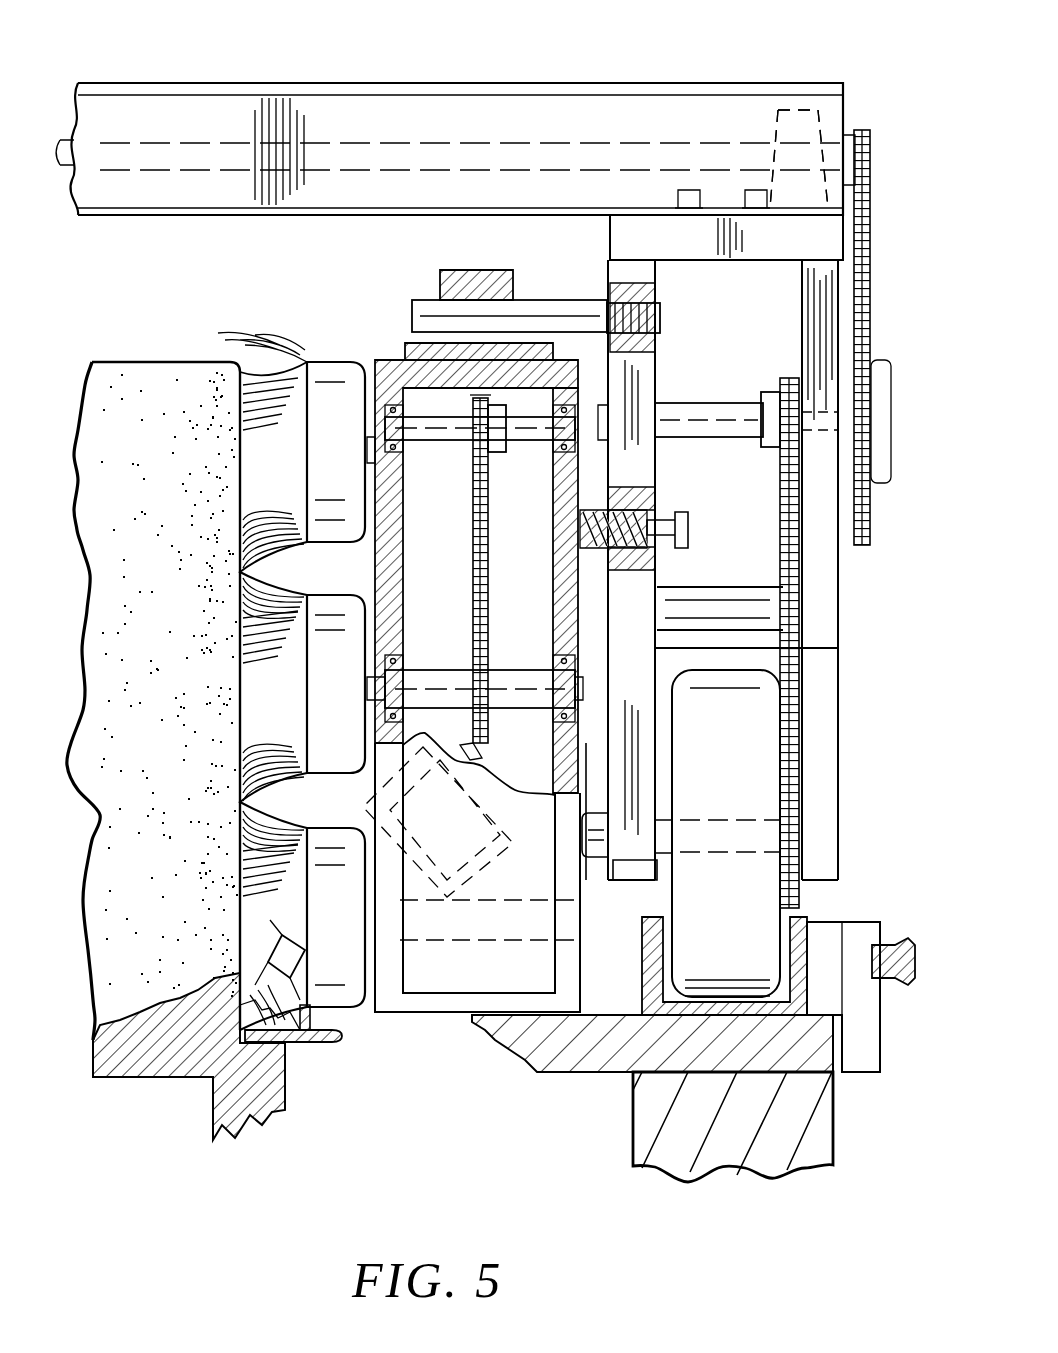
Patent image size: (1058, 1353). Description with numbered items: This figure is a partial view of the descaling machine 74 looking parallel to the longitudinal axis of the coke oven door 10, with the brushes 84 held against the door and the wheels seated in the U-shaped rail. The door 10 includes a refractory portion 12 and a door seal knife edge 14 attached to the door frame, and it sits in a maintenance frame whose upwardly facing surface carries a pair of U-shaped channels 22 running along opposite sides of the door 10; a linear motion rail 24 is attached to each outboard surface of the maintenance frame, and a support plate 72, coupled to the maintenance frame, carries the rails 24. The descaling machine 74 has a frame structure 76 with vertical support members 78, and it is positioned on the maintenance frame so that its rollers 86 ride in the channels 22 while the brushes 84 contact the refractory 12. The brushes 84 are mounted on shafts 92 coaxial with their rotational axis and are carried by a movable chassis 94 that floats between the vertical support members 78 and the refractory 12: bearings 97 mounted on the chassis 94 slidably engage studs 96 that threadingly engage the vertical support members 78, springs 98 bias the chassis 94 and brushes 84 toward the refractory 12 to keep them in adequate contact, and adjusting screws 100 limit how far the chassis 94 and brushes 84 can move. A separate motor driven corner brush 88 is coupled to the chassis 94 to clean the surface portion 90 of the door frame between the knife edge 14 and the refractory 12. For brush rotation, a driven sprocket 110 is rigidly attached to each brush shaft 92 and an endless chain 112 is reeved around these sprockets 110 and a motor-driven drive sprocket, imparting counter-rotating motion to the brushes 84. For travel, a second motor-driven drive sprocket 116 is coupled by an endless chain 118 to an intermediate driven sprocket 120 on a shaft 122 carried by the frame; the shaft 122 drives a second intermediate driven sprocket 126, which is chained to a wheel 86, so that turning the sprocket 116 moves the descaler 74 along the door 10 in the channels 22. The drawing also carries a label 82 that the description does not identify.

The coke oven door 10 is at (190, 1085).
The refractory portion 12 is at (162, 510).
The door seal knife edge 14 is at (352, 1032).
The channels 22 is at (645, 992).
The linear motion rail 24 is at (892, 940).
The support plate 72 is at (850, 938).
The descaling machine 74 is at (460, 82).
The frame structure 76 is at (818, 795).
The vertical support members 78 is at (582, 90).
The drive assembly 82 is at (738, 86).
The brushes 84 is at (330, 392).
The rollers 86 is at (755, 738).
The corner brush 88 is at (278, 940).
The surface portion 90 is at (238, 955).
The shafts 92 is at (527, 460).
The chassis 94 is at (386, 372).
The studs 96 is at (572, 318).
The bearings 97 is at (474, 292).
The springs 98 is at (596, 872).
The adjusting screws 100 is at (690, 528).
The driven sprocket 110 is at (478, 440).
The endless chain 112 is at (452, 492).
The second motor-driven drive sprocket 116 is at (873, 163).
The endless chain 118 is at (805, 300).
The intermediate driven sprocket 120 is at (868, 520).
The shaft 122 is at (686, 414).
The second intermediate driven sprocket 126 is at (772, 398).